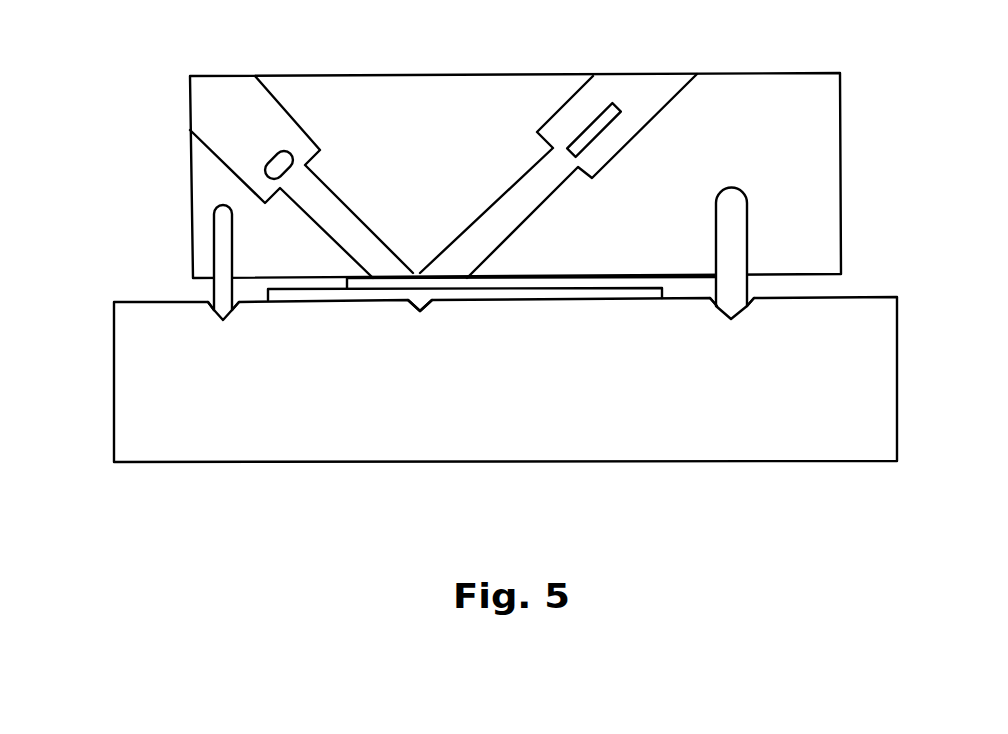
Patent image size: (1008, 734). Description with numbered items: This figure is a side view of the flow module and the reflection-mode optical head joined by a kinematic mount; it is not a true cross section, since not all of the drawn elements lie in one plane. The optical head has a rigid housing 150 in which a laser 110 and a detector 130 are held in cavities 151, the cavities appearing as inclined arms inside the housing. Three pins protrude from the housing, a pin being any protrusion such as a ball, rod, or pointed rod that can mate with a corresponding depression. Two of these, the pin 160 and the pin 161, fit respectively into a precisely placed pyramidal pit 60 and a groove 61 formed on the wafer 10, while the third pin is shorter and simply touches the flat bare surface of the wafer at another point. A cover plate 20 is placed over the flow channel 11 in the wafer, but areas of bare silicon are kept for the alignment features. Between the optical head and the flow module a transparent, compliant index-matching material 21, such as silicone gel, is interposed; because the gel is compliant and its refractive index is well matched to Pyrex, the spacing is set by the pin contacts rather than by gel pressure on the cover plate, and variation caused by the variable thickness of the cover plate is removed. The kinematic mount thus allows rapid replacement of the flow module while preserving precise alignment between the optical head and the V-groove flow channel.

The wafer 10 is at (114, 383).
The flow channel 11 is at (423, 310).
The cover plate 20 is at (291, 290).
The index-matching material 21 is at (470, 280).
The pyramidal pit 60 is at (222, 320).
The groove 61 is at (728, 320).
The laser 110 is at (615, 107).
The detector 130 is at (262, 160).
The rigid housing 150 is at (807, 74).
The cavities 151 is at (263, 98).
The pin 160 is at (213, 292).
The pin 161 is at (730, 220).